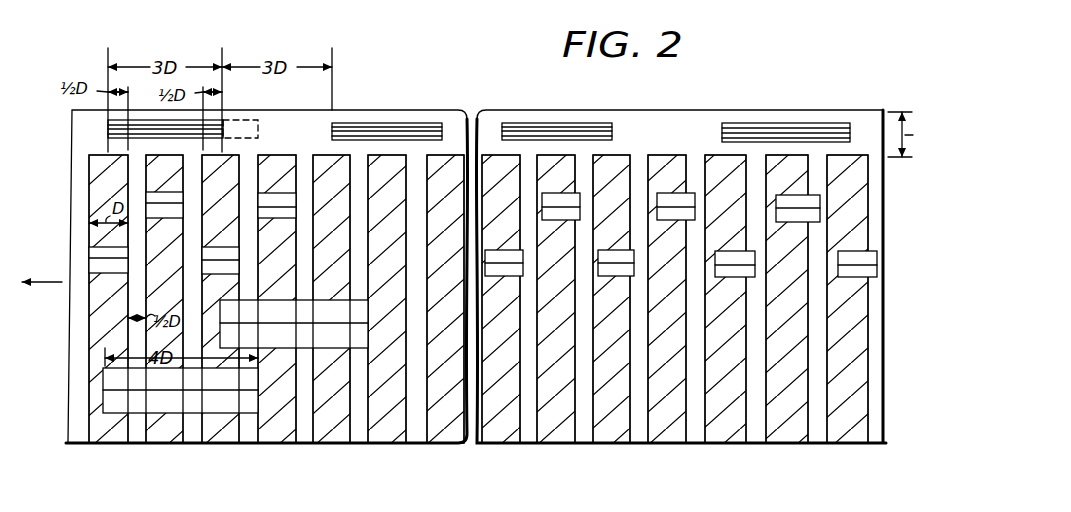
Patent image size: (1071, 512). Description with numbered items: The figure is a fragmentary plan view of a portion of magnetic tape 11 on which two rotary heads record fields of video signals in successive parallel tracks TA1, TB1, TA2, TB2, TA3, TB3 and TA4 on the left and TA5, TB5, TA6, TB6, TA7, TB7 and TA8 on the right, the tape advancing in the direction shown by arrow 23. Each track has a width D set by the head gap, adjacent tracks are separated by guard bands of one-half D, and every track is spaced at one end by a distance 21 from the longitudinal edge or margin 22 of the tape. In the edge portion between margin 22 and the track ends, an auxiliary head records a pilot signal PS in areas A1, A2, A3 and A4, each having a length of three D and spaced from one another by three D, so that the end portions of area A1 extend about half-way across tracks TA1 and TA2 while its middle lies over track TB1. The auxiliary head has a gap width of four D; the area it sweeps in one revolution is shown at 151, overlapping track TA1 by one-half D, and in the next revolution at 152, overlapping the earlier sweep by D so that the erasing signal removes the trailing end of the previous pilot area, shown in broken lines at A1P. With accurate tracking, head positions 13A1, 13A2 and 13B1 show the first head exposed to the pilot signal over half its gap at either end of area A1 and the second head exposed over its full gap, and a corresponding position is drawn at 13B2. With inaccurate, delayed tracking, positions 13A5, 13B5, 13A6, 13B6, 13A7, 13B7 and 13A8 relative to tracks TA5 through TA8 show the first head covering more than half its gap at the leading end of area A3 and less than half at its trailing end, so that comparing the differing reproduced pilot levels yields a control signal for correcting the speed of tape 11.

The magnetic tape 11 is at (76, 340).
The distance 21 is at (913, 134).
The longitudinal edge or margin 22 is at (456, 110).
The direction of advancement 23 is at (42, 282).
The scanning position of head 13A 13A1 is at (112, 264).
The scanning position of head 13A 13A2 is at (219, 248).
The scanning position of head 13A 13A5 is at (498, 270).
The scanning position of head 13A 13A6 is at (608, 270).
The scanning position of head 13A 13A7 is at (727, 268).
The scanning position of head 13A 13A8 is at (858, 273).
The scanning position of head 13B 13B1 is at (158, 219).
The segment 13B2 is at (273, 219).
The scanning position of head 13B 13B5 is at (561, 239).
The scanning position of head 13B 13B6 is at (667, 218).
The scanning position of head 13B 13B7 is at (800, 215).
The area traversed by auxiliary head 151 is at (115, 402).
The area traversed by auxiliary head 152 is at (278, 340).
The pilot signal area A1 is at (110, 143).
The erased trailing end portion A1P is at (257, 130).
The pilot signal area A2 is at (393, 98).
The pilot signal area A3 is at (572, 123).
The pilot signal area A4 is at (773, 125).
The pilot signal PS is at (405, 135).
The record track TA1 is at (110, 433).
The record track TB1 is at (162, 433).
The record track TA2 is at (220, 433).
The record track TB2 is at (278, 433).
The record track TA3 is at (332, 431).
The record track TB3 is at (388, 431).
The record track TA4 is at (443, 431).
The record track TA5 is at (505, 431).
The record track TB5 is at (557, 431).
The record track TA6 is at (605, 431).
The record track TB6 is at (668, 432).
The record track TA7 is at (723, 432).
The record track TB7 is at (785, 431).
The record track TA8 is at (843, 432).